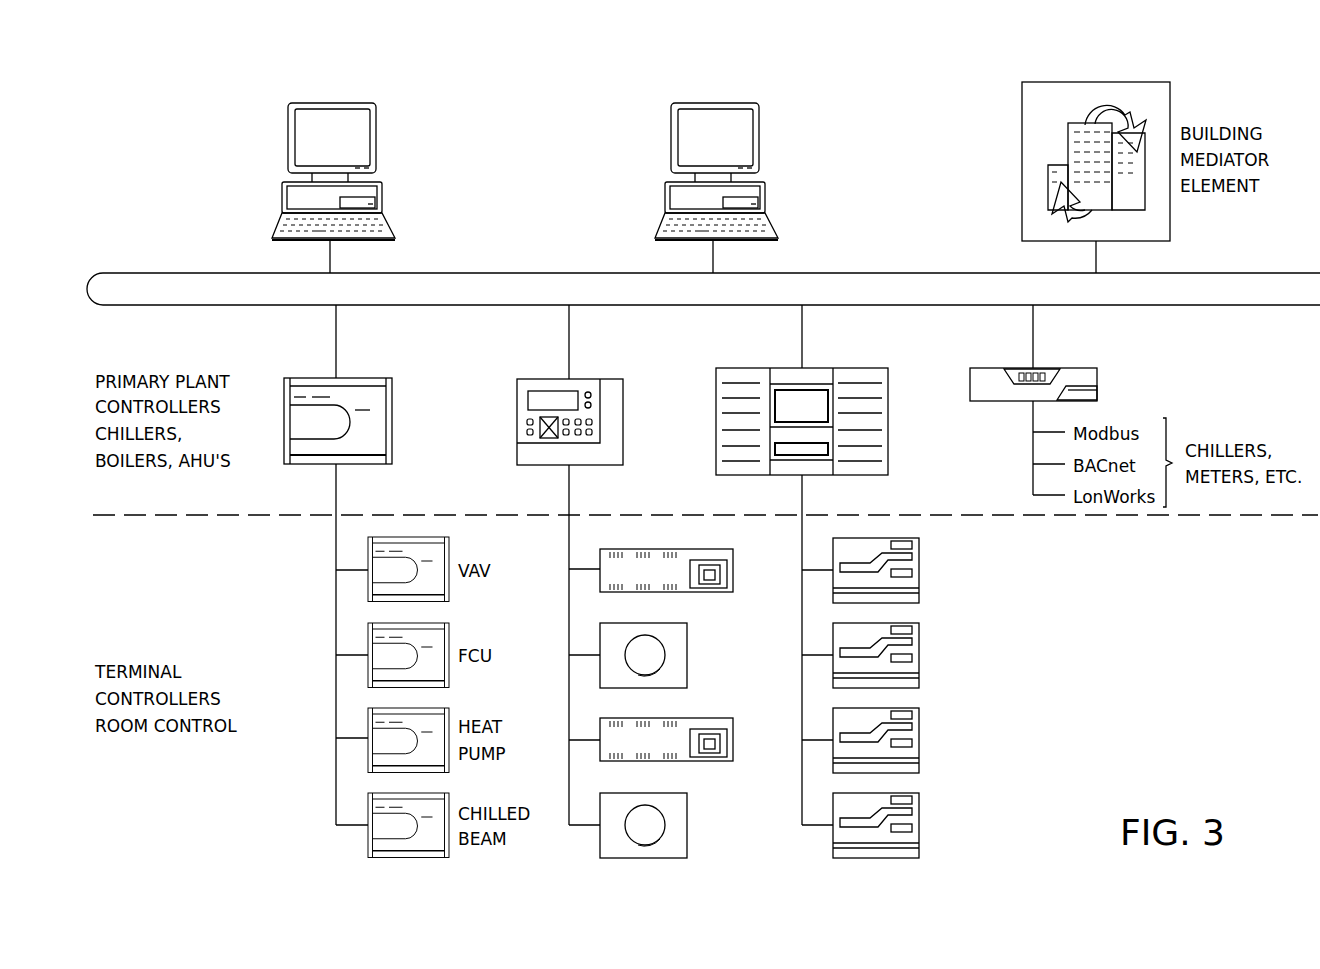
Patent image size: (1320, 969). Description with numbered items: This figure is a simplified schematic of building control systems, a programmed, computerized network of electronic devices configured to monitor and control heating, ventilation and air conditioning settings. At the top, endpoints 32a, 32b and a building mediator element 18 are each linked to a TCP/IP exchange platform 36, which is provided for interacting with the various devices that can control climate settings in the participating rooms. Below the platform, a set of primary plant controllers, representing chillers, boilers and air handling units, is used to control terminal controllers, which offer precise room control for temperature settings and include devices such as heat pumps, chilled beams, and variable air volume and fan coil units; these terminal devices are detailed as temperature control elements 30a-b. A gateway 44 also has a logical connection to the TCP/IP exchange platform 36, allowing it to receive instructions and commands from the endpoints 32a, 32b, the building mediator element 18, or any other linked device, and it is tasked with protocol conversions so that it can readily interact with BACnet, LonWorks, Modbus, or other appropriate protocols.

The endpoint 32a is at (320, 103).
The endpoint 32b is at (703, 103).
The building mediator element 18 is at (1096, 82).
The TCP/IP exchange platform 36 is at (886, 273).
The gateway 44 is at (1097, 385).
The temperature control elements 30a-b is at (972, 710).